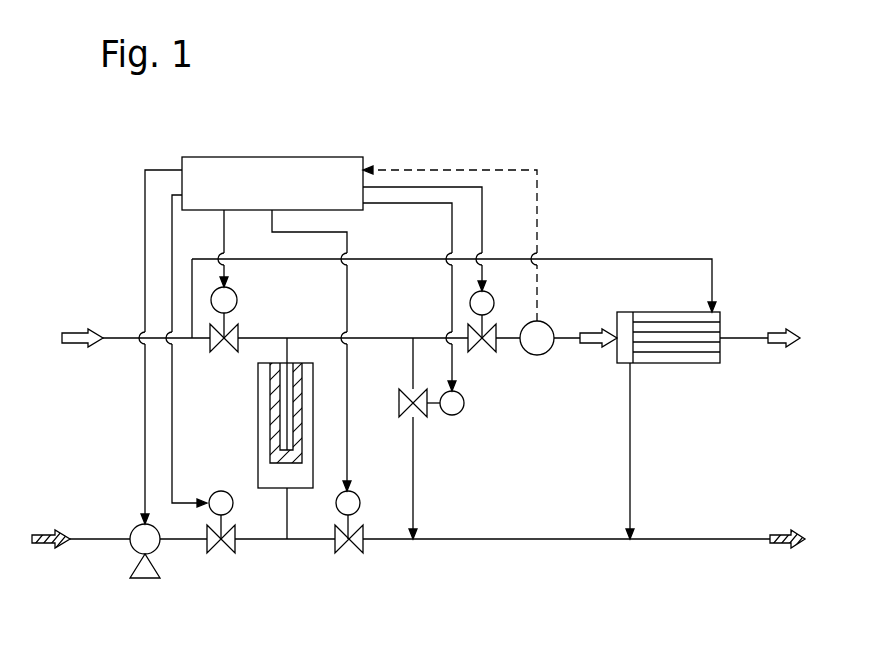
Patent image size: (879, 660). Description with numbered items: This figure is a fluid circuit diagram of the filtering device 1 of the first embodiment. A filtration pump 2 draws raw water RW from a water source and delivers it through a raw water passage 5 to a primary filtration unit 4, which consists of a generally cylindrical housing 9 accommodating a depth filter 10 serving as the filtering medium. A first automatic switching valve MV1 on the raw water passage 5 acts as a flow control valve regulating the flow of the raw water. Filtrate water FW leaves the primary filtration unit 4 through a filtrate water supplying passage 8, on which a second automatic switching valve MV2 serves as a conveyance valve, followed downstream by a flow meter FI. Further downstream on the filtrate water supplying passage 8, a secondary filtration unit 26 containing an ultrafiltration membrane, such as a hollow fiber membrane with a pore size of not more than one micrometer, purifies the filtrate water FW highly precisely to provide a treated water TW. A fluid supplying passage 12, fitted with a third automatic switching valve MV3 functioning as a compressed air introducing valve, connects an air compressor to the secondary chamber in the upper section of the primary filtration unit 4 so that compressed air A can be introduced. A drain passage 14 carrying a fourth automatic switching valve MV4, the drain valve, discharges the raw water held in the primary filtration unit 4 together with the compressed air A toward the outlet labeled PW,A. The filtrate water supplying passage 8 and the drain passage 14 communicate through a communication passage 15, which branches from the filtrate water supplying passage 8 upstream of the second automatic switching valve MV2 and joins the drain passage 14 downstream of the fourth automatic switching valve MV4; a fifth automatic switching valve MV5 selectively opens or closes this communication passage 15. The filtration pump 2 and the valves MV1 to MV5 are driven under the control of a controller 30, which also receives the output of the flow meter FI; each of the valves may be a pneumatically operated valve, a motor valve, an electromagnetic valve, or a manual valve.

The filtering device 1 is at (673, 176).
The filtration pump 2 is at (146, 579).
The primary filtration unit 4 is at (252, 385).
The raw water passage 5 is at (181, 541).
The filtrate water supplying passage 8 is at (386, 337).
The housing 9 is at (270, 462).
The depth filter 10 is at (270, 420).
The fluid supplying passage 12 is at (259, 336).
The drain passage 14 is at (303, 541).
The communication passage 15 is at (416, 460).
The secondary filtration unit 26 is at (720, 312).
The controller 30 is at (277, 157).
The first automatic switching valve MV1 is at (215, 492).
The second automatic switching valve MV2 is at (482, 353).
The third automatic switching valve MV3 is at (233, 291).
The fourth automatic switching valve MV4 is at (352, 556).
The fifth automatic switching valve MV5 is at (460, 414).
The flow meter FI is at (537, 338).
The compressed air A is at (77, 348).
The raw water RW is at (46, 549).
The filtrate water FW is at (597, 362).
The treated water TW is at (773, 349).
The product water and air outlet PW,A is at (781, 565).